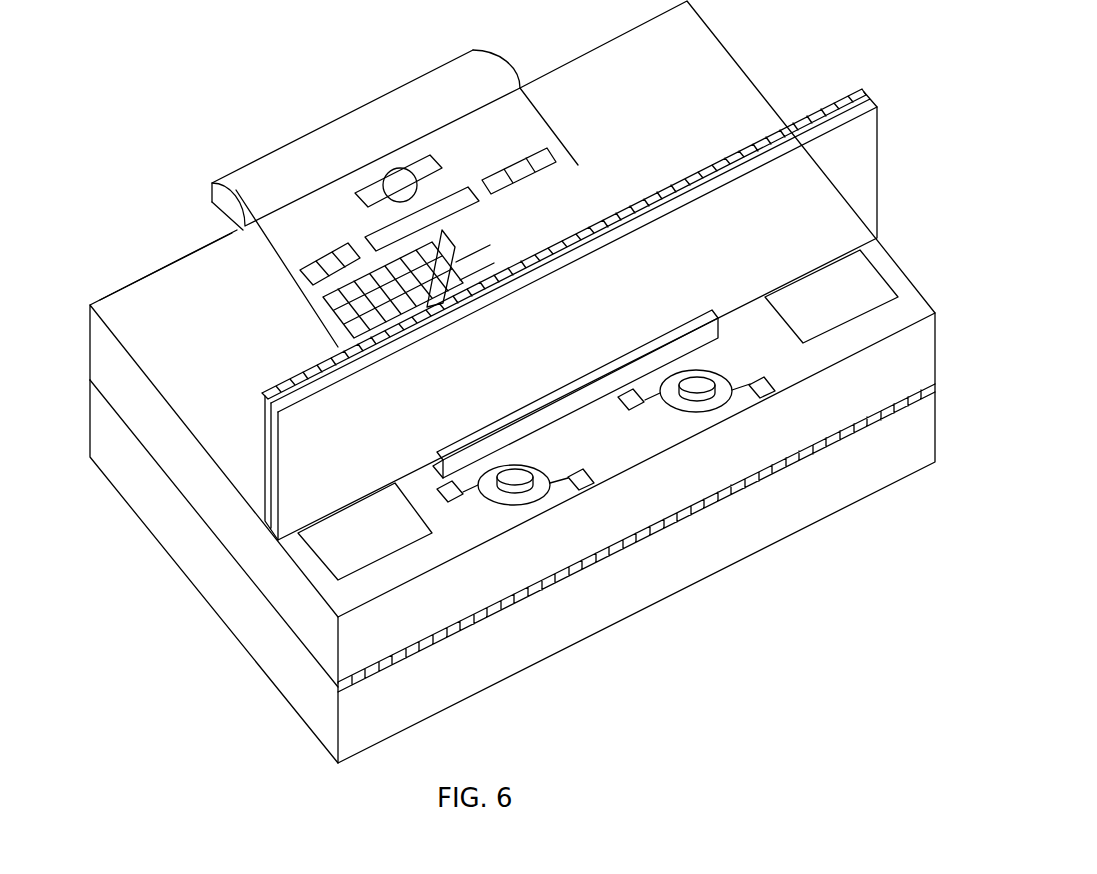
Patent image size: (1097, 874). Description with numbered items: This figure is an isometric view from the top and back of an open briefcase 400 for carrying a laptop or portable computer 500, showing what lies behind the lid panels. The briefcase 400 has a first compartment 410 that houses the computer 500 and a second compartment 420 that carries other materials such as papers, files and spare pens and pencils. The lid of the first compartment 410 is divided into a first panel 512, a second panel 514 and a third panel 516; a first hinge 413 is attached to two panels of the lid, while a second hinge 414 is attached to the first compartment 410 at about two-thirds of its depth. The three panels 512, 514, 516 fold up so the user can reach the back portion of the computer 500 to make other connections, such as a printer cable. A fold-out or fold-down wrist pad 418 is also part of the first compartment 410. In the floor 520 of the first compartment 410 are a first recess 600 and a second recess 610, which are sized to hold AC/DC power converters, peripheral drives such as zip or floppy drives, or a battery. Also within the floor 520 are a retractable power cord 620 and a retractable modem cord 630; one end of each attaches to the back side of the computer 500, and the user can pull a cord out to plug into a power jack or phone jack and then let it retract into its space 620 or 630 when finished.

The briefcase 400 is at (865, 62).
The first compartment 410 is at (823, 397).
The first hinge 413 is at (808, 125).
The second hinge 414 is at (277, 537).
The wrist pad 418 is at (320, 142).
The second compartment 420 is at (830, 490).
The laptop computer 500 is at (327, 317).
The first panel 512 is at (264, 432).
The second panel 514 is at (866, 98).
The third panel 516 is at (853, 174).
The floor 520 is at (195, 285).
The first recess 600 is at (381, 527).
The second recess 610 is at (852, 292).
The retractable power cord 620 is at (517, 475).
The retractable modem cord 630 is at (697, 383).